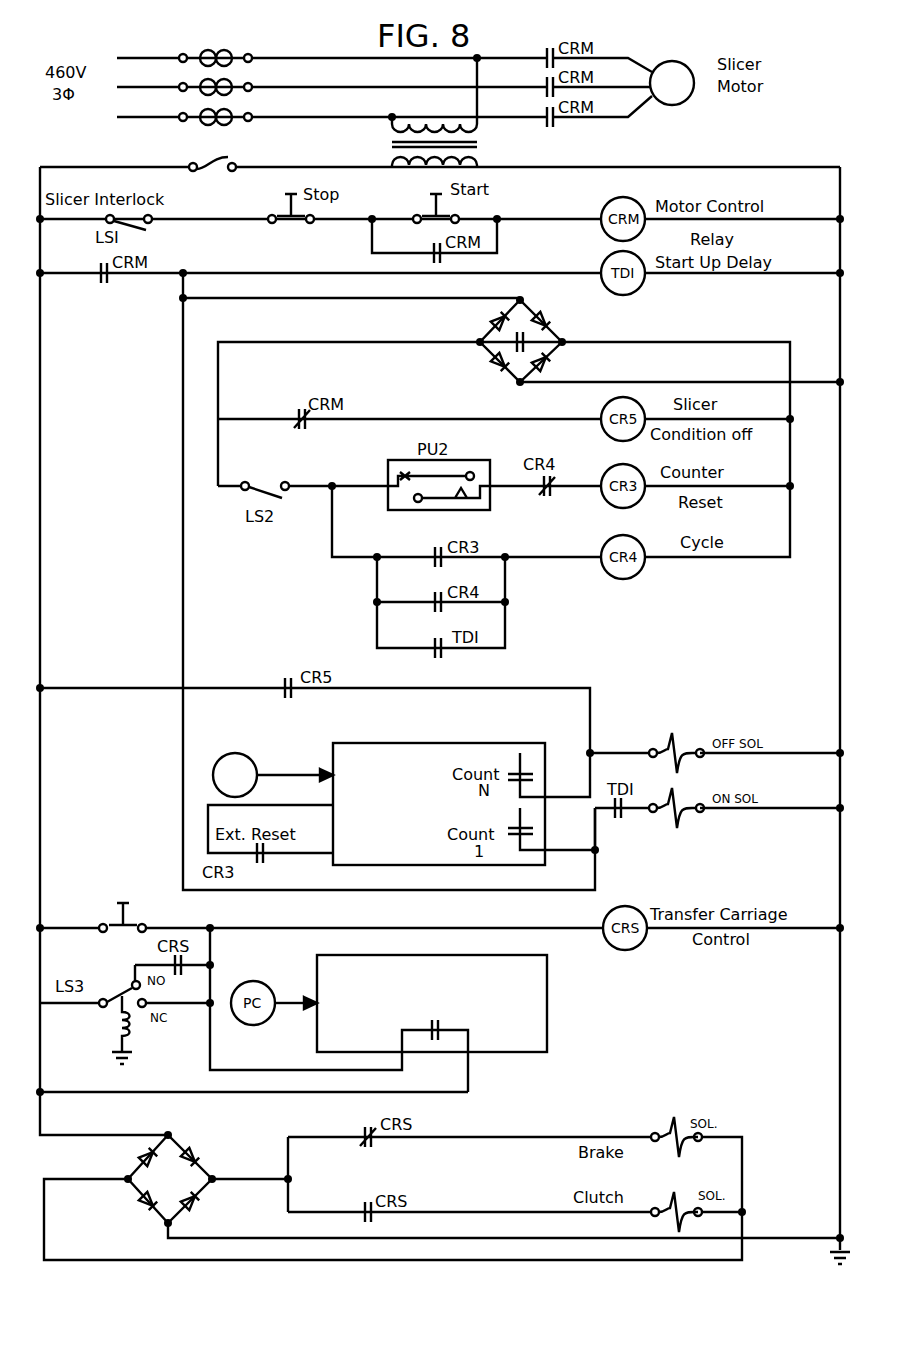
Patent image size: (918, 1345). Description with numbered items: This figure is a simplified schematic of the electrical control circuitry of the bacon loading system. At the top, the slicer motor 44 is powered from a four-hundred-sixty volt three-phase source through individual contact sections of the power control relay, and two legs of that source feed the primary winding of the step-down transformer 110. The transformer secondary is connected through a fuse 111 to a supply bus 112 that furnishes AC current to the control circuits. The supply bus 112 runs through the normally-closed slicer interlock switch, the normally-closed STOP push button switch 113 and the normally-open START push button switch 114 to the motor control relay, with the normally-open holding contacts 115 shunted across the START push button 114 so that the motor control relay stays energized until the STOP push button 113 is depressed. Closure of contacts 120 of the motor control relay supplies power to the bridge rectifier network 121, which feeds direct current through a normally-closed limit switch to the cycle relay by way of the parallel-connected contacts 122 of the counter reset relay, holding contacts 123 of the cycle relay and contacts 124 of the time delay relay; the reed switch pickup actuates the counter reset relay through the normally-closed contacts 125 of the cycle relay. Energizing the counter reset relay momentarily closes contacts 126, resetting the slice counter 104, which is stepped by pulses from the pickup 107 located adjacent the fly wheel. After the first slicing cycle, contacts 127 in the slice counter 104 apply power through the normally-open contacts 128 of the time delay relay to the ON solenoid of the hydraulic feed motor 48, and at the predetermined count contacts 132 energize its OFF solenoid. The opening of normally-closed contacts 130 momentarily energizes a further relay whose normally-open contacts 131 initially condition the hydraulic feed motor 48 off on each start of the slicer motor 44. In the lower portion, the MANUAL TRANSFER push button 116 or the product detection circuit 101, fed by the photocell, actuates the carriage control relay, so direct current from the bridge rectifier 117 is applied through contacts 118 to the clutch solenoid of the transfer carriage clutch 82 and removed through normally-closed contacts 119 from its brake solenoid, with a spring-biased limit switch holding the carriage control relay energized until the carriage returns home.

The slicer motor 44 is at (672, 61).
The hydraulic feed motor 48 is at (670, 738).
The sprocket 82 is at (661, 1132).
The product detection circuit 101 is at (548, 1006).
The slice counter 104 is at (411, 743).
The second pickup 107 is at (235, 753).
The step-down transformer 110 is at (480, 146).
The fuse 111 is at (228, 158).
The supply bus 112 is at (40, 426).
The STOP push button switch 113 is at (300, 222).
The START push button switch 114 is at (462, 216).
The holding contacts 115 is at (445, 258).
The MANUAL TRANSFER push button 116 is at (106, 912).
The bridge rectifier 117 is at (178, 1152).
The contacts of relay CRS 118 is at (365, 1211).
The normally-closed contacts of relay CRS 119 is at (362, 1136).
The contacts of relay CRM 120 is at (107, 283).
The bridge rectifier network 121 is at (546, 320).
The contacts of relay CR3 122 is at (432, 554).
The contacts of relay CR4 123 is at (432, 599).
The contacts of time delay relay TD1 124 is at (432, 644).
The normally-closed contacts of relay CR4 125 is at (540, 498).
The contacts of relay CR3 126 is at (266, 858).
The contacts in slice counter 127 is at (535, 831).
The normally-open contacts of relay TD1 128 is at (622, 820).
The normally-closed contacts 130 is at (298, 431).
The normally-open contacts of CR5 131 is at (292, 698).
The contacts of slice counter 132 is at (535, 777).